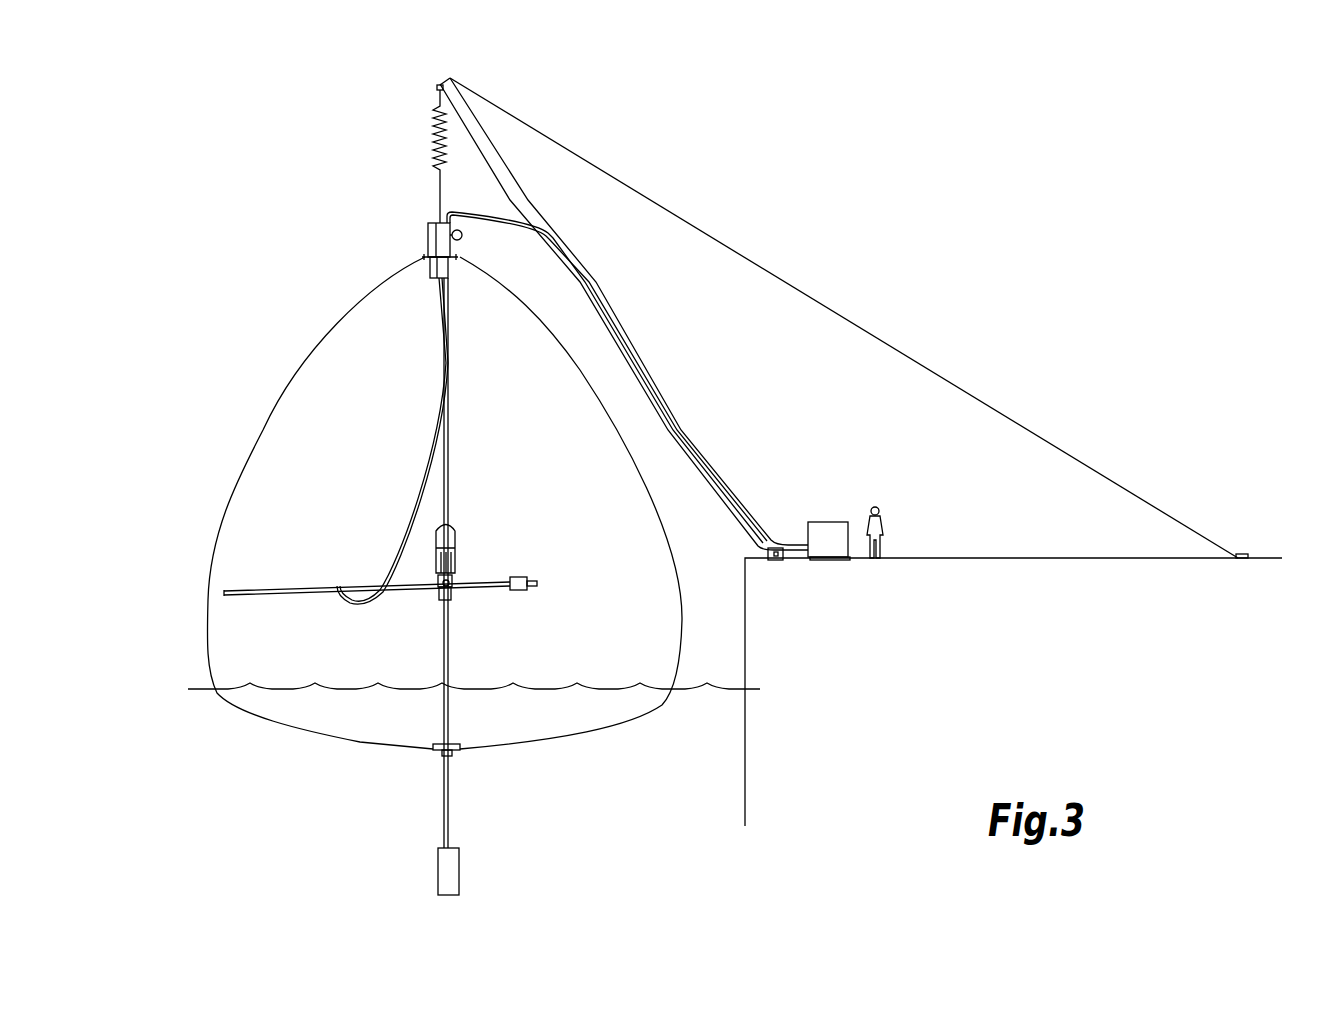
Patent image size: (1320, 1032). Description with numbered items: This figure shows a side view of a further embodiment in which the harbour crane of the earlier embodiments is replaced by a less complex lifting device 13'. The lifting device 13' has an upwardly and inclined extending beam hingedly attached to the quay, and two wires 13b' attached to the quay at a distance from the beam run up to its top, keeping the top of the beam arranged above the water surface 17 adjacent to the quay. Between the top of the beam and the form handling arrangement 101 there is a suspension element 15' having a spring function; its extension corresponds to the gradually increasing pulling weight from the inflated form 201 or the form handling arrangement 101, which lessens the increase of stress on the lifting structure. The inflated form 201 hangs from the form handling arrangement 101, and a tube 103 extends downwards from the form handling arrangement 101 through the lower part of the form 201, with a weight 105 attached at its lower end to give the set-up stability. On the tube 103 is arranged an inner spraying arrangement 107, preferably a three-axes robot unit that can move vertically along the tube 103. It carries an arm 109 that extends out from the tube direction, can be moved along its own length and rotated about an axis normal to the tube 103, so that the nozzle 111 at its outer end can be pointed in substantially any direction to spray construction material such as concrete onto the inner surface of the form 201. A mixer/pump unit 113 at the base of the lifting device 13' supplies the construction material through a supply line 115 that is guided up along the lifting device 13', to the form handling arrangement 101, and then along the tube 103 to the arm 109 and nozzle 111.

The lifting device 13' is at (624, 319).
The wires 13b' is at (849, 318).
The suspension element 15' is at (397, 150).
The water surface 17 is at (206, 688).
The form handling arrangement 101 is at (430, 241).
The tube 103 is at (448, 644).
The weight 105 is at (453, 866).
The inner spraying arrangement 107 is at (456, 576).
The arm 109 is at (275, 592).
The nozzle 111 is at (226, 590).
The mixer/pump unit 113 is at (824, 533).
The supply line 115 is at (507, 233).
The inflated form 201 is at (331, 338).